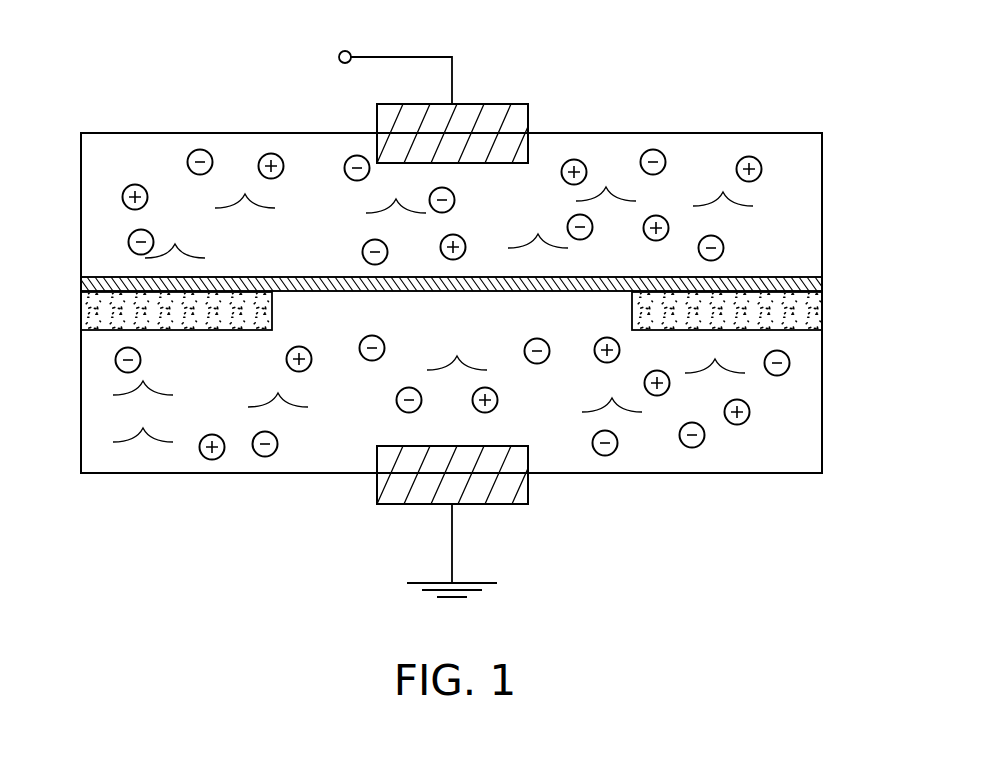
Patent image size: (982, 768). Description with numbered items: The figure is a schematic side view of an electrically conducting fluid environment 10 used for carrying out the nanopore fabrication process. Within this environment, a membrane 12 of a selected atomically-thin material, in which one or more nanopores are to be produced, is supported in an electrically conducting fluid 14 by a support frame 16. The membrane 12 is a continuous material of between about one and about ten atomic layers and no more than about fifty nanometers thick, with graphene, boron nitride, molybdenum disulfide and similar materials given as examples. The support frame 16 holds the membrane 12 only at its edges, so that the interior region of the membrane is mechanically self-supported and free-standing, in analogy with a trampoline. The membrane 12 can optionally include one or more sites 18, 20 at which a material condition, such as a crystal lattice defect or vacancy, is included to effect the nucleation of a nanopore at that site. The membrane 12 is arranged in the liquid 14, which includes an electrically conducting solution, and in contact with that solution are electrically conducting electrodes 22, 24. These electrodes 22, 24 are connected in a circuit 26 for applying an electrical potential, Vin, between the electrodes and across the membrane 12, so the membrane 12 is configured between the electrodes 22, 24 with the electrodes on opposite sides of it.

The electrically conducting fluid environment 10 is at (77, 93).
The membrane 12 is at (304, 277).
The electrically conducting fluid 14 is at (211, 384).
The support frame 16 is at (92, 312).
The site 18 is at (506, 284).
The site 20 is at (403, 291).
The electrode 22 is at (518, 104).
The electrode 24 is at (528, 489).
The circuit 26 is at (430, 57).